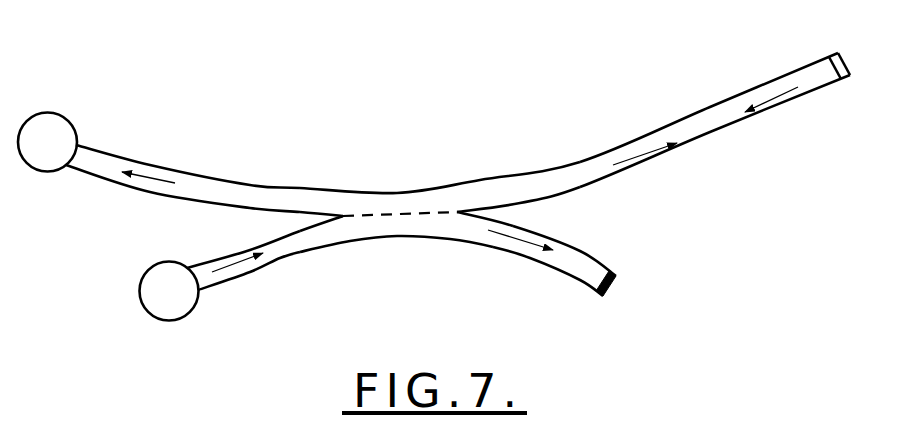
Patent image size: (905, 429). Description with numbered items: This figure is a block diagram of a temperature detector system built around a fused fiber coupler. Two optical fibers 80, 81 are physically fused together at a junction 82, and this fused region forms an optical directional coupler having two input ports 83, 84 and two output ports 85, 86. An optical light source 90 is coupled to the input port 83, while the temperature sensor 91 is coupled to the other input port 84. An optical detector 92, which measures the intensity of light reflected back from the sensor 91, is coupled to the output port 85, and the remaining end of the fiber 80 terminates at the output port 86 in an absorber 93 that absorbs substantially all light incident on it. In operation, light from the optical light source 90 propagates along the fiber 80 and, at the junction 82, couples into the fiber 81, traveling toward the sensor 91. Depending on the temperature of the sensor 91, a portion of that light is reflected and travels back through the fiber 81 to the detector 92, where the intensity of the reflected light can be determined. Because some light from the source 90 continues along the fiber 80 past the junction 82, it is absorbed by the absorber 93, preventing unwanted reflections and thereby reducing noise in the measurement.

The fiber 80 is at (380, 237).
The fiber 81 is at (300, 187).
The junction 82 is at (425, 210).
The input port 83 is at (223, 287).
The input port 84 is at (817, 65).
The output port 85 is at (110, 155).
The output port 86 is at (602, 257).
The optical light source 90 is at (147, 272).
The sensor 91 is at (848, 65).
The optical detector 92 is at (72, 123).
The absorber 93 is at (618, 282).